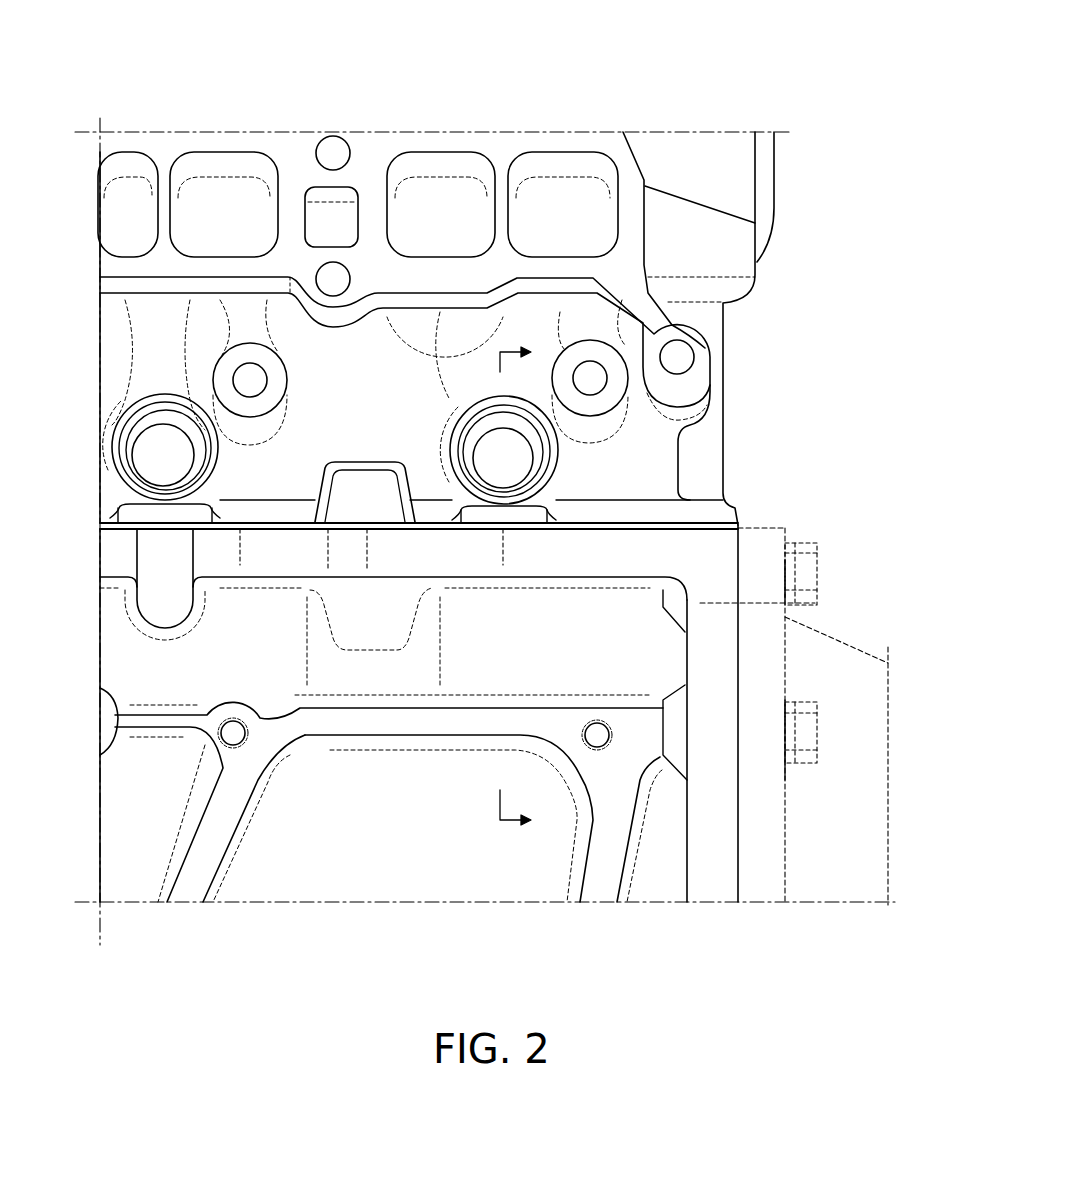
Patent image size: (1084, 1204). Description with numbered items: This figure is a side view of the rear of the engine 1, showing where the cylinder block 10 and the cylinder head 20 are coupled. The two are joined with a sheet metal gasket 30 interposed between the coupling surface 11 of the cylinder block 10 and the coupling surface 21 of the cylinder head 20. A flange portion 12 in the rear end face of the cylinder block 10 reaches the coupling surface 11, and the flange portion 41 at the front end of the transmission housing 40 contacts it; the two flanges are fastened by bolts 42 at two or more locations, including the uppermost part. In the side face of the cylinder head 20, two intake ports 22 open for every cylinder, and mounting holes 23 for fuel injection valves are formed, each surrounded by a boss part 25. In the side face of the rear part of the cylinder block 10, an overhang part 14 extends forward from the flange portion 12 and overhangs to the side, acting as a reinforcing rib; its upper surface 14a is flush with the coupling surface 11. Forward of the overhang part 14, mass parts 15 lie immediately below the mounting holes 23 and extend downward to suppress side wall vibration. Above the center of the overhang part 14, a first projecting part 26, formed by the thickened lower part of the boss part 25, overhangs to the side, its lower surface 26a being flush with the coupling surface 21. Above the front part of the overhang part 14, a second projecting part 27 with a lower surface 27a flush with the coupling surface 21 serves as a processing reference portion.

The engine 1 is at (725, 99).
The cylinder block 10 is at (419, 760).
The coupling surface 11 is at (645, 537).
The flange portion 12 is at (702, 665).
The overhang part 14 is at (393, 608).
The upper surface 14a is at (457, 535).
The mass part 15 is at (163, 613).
The cylinder head 20 is at (436, 287).
The coupling surface 21 is at (633, 525).
The intake ports 22 is at (122, 197).
The mounting hole 23 is at (175, 452).
The boss part 25 is at (228, 462).
The first projecting part 26 is at (420, 412).
The lower surface 26a is at (447, 484).
The second projecting part 27 is at (354, 455).
The lower surface 27a is at (337, 506).
The sheet metal gasket 30 is at (701, 522).
The housing 40 is at (794, 695).
The flange portion 41 is at (783, 665).
The bolts 42 is at (816, 570).